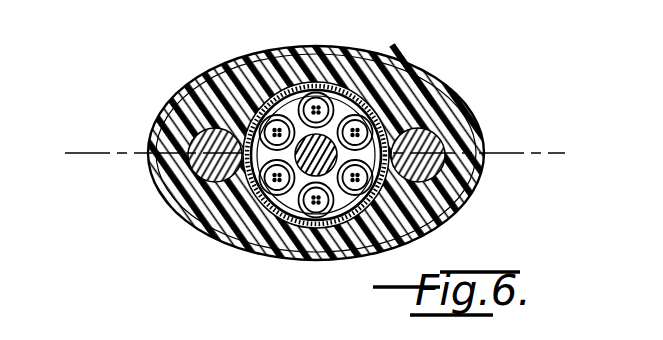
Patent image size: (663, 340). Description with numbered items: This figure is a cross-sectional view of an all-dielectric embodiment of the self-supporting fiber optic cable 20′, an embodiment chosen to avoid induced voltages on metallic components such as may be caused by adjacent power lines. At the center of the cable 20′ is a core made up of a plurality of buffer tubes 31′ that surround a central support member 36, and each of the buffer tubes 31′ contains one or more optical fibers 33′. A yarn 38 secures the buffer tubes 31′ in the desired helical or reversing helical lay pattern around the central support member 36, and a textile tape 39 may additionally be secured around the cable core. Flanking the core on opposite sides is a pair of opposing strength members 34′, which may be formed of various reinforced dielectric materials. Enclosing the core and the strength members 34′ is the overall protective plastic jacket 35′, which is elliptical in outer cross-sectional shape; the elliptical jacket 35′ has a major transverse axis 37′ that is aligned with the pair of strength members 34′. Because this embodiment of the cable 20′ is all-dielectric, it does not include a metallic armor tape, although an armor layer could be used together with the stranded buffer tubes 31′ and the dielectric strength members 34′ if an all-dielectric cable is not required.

The self-supporting fiber optic cable 20′ is at (312, 139).
The buffer tubes 31′ is at (365, 98).
The optical fibers 33′ is at (300, 85).
The strength members 34′ is at (462, 118).
The protective plastic jacket 35′ is at (455, 213).
The central support member 36 is at (250, 251).
The major transverse axis 37′ is at (82, 153).
The yarn 38 is at (415, 78).
The textile tape 39 is at (372, 103).